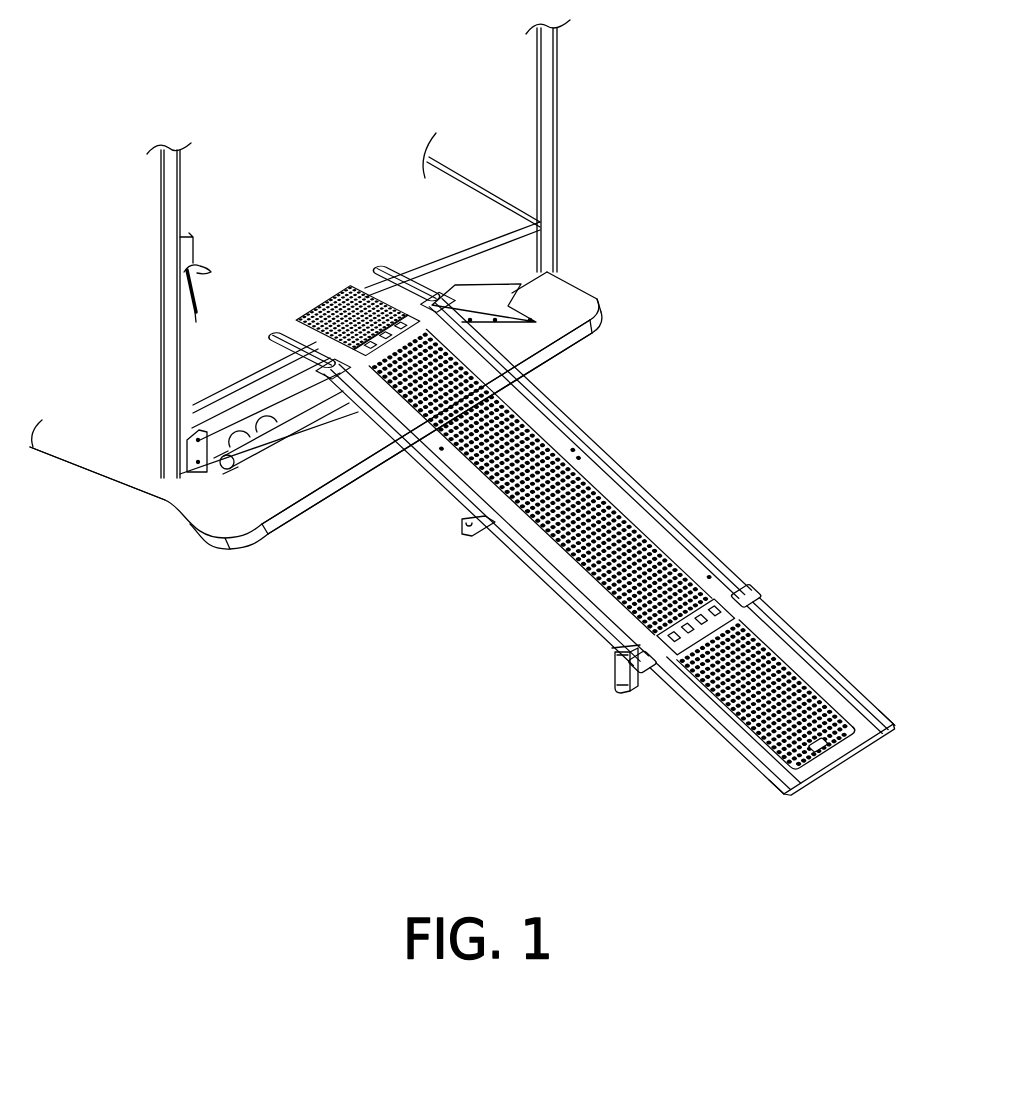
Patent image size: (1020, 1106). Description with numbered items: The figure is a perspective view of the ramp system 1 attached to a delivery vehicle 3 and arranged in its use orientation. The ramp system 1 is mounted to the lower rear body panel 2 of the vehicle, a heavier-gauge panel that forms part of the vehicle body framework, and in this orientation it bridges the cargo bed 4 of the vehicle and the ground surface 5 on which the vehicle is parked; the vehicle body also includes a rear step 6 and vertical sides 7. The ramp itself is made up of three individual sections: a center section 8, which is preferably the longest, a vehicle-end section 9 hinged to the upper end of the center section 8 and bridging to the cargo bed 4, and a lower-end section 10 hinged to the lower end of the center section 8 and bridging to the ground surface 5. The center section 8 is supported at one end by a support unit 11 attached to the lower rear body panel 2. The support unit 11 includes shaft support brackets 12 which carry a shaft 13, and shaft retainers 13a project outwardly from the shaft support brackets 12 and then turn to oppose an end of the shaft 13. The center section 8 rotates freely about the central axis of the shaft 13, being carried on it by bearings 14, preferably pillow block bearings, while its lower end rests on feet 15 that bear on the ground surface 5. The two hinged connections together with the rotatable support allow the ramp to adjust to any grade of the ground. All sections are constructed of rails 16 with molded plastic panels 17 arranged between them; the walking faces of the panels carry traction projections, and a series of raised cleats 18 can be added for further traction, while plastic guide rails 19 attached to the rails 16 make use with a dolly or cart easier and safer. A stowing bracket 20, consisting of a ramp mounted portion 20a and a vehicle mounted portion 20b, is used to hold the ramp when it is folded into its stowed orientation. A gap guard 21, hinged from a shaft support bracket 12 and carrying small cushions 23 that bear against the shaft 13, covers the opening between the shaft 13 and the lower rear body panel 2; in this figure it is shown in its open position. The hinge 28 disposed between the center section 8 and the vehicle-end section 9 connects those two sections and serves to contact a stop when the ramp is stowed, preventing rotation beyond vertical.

The ramp system 1 is at (777, 317).
The lower rear body panel 2 is at (536, 270).
The delivery vehicle 3 is at (401, 249).
The cargo bed 4 is at (410, 238).
The ground surface 5 is at (896, 807).
The rear step 6 is at (277, 495).
The vertical sides 7 is at (550, 109).
The center section 8 is at (591, 489).
The vehicle-end section 9 is at (340, 278).
The lower-end section 10 is at (827, 647).
The support unit 11 is at (247, 478).
The shaft support brackets 12 is at (213, 440).
The shaft 13 is at (292, 412).
The shaft retainers 13a is at (187, 488).
The bearings 14 is at (343, 407).
The feet 15 is at (612, 682).
The rails 16 is at (600, 621).
The molded plastic panels 17 is at (628, 517).
The raised cleats 18 is at (668, 553).
The plastic guide rails 19 is at (380, 284).
The stowing bracket 20 is at (330, 416).
The ramp mounted portion 20a is at (463, 517).
The vehicle mounted portion 20b is at (192, 274).
The gap guard 21 is at (487, 291).
The small cushions 23 is at (534, 316).
The hinge 28 is at (326, 345).